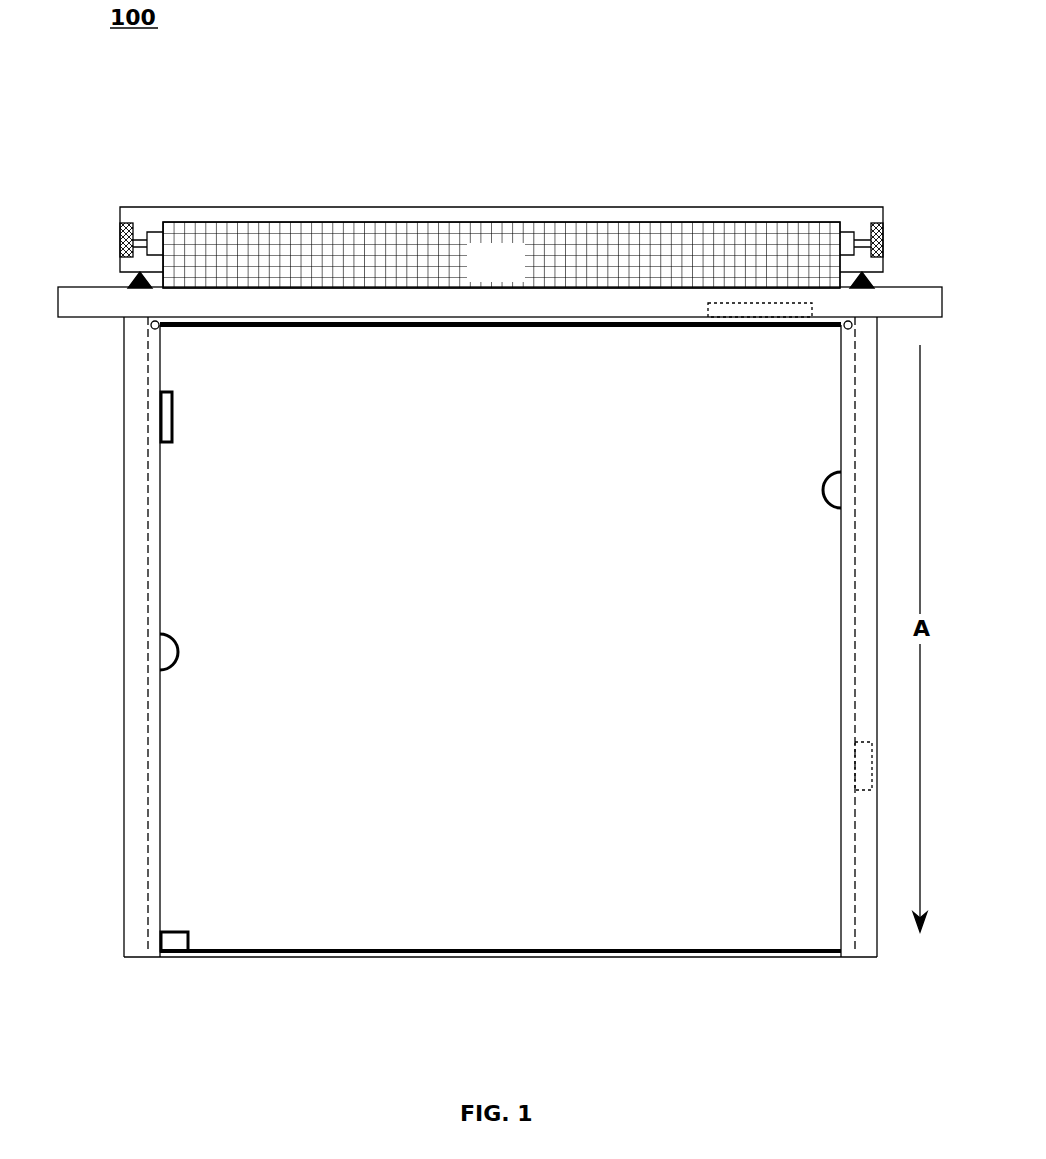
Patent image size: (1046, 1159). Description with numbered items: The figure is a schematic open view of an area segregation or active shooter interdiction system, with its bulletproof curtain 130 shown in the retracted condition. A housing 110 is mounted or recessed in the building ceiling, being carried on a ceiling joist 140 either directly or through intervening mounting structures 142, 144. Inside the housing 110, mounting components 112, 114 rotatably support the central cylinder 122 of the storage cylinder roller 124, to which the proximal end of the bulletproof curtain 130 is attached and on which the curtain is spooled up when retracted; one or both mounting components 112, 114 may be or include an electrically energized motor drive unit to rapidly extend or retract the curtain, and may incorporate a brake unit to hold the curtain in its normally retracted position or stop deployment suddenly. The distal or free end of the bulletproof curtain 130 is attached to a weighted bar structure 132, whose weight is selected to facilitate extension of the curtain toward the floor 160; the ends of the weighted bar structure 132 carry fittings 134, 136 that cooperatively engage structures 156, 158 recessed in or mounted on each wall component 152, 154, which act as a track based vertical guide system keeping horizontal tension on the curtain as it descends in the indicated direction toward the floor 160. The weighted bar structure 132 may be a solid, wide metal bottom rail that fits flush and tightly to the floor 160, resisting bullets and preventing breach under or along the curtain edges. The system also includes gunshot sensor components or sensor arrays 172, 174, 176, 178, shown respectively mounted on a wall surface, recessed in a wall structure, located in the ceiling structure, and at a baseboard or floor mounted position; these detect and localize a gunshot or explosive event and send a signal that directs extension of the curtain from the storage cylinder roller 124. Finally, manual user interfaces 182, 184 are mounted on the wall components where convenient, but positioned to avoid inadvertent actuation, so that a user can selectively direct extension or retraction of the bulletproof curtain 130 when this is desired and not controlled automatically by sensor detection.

The housing 110 is at (120, 208).
The mounting component 112 is at (122, 233).
The mounting component 114 is at (884, 230).
The central cylinder 122 is at (138, 237).
The storage cylinder roller 124 is at (852, 237).
The bulletproof curtain 130 is at (501, 255).
The weighted bar structure 132 is at (493, 333).
The fitting 134 is at (160, 328).
The fitting 136 is at (842, 330).
The ceiling joist 140 is at (133, 303).
The mounting structure 142 is at (129, 279).
The mounting structure 144 is at (873, 279).
The wall component 152 is at (160, 607).
The wall component 154 is at (841, 605).
The structure 156 is at (160, 722).
The structure 158 is at (847, 722).
The floor 160 is at (493, 945).
The gunshot sensor component 172 is at (172, 418).
The gunshot sensor component 174 is at (858, 766).
The gunshot sensor component 176 is at (758, 308).
The gunshot sensor component 178 is at (183, 933).
The manual user interface 182 is at (183, 650).
The manual user interface 184 is at (822, 488).